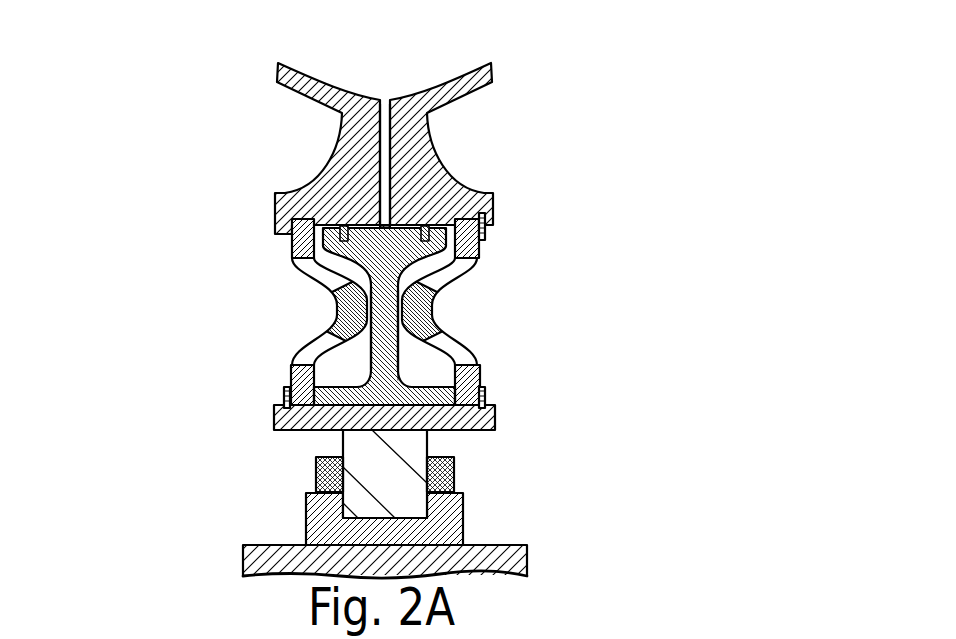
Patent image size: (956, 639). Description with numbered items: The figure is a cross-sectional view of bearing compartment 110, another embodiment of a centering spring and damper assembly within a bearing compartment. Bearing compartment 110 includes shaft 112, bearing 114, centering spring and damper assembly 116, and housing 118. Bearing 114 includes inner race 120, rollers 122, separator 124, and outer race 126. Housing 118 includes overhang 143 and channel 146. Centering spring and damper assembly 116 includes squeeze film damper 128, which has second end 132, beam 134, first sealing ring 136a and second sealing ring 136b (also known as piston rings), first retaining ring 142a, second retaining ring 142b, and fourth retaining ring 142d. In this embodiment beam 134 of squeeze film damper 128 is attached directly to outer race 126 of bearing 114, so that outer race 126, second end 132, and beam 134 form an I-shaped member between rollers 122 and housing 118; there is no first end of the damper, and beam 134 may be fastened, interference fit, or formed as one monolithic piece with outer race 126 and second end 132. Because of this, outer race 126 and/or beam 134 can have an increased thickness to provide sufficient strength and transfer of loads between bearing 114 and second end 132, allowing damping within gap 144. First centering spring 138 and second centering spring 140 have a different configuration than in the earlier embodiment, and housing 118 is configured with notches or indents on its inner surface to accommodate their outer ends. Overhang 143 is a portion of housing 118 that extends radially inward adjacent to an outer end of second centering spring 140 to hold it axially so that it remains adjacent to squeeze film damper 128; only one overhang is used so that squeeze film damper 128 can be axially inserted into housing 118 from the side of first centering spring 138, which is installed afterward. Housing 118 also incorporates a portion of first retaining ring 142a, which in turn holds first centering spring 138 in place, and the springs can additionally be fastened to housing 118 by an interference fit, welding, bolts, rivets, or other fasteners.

The bearing compartment 110 is at (142, 129).
The shaft 112 is at (260, 564).
The bearing 114 is at (260, 472).
The centering spring and damper assembly 116 is at (238, 301).
The housing 118 is at (350, 168).
The inner race 120 is at (446, 519).
The rollers 122 is at (408, 446).
The separator 124 is at (444, 475).
The outer race 126 is at (472, 421).
The squeeze film damper 128 is at (418, 357).
The second end 132 is at (322, 238).
The beam 134 is at (387, 335).
The first sealing ring 136a is at (428, 227).
The second sealing ring 136b is at (340, 227).
The first centering spring 138 is at (465, 242).
The second centering spring 140 is at (310, 336).
The first retaining ring 142a is at (483, 217).
The second retaining ring 142b is at (486, 401).
The fourth retaining ring 142d is at (286, 391).
The overhang 143 is at (280, 226).
The gap 144 is at (368, 212).
The channel 146 is at (386, 86).